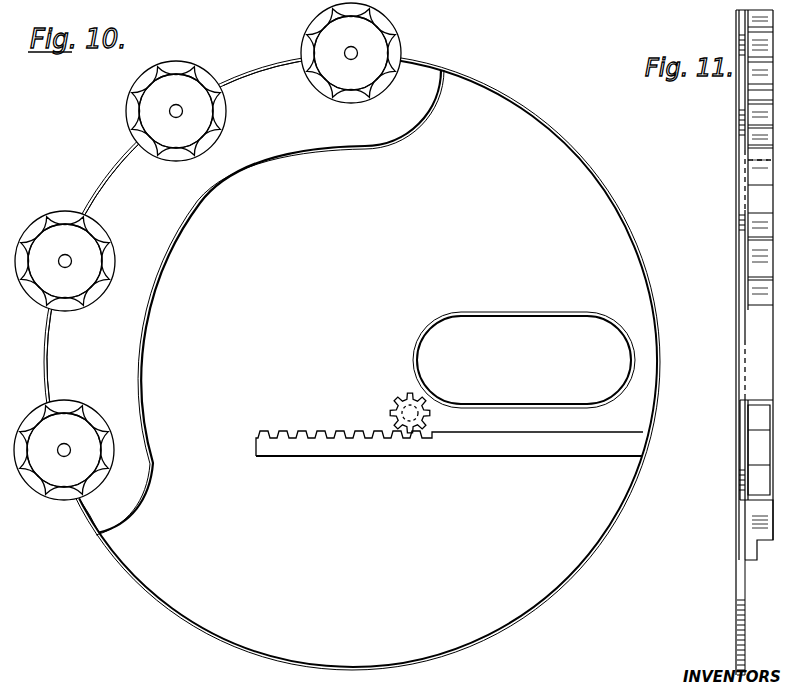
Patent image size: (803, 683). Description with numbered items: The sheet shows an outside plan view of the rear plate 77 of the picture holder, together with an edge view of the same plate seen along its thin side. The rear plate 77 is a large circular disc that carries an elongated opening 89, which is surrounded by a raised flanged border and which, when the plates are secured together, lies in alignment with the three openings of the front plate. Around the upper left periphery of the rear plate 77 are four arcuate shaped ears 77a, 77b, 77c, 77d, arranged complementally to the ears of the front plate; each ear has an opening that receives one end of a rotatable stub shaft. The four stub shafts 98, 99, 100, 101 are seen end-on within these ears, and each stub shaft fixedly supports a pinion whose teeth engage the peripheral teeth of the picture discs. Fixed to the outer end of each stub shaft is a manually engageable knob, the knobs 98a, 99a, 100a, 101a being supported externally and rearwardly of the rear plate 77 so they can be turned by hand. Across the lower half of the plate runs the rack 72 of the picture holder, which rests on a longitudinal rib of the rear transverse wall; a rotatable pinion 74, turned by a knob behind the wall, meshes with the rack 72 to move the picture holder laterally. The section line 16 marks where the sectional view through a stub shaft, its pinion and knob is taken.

The section line 16- 16 is at (400, 55).
The rack 72 is at (376, 438).
The pinion 74 is at (400, 402).
The rear plate 77 is at (560, 179).
The arcuate shaped ear 77a is at (312, 60).
The arcuate shaped ear 77b is at (134, 133).
The arcuate shaped ear 77c is at (58, 214).
The arcuate shaped ear 77d is at (63, 505).
The elongated opening 89 is at (626, 340).
The stub shaft 98 is at (346, 57).
The knob 98a is at (374, 54).
The stub shaft 99 is at (174, 116).
The knob 99a is at (197, 100).
The stub shaft 100 is at (66, 268).
The knob 100a is at (92, 258).
The stub shaft 101 is at (72, 451).
The knob 101a is at (80, 424).